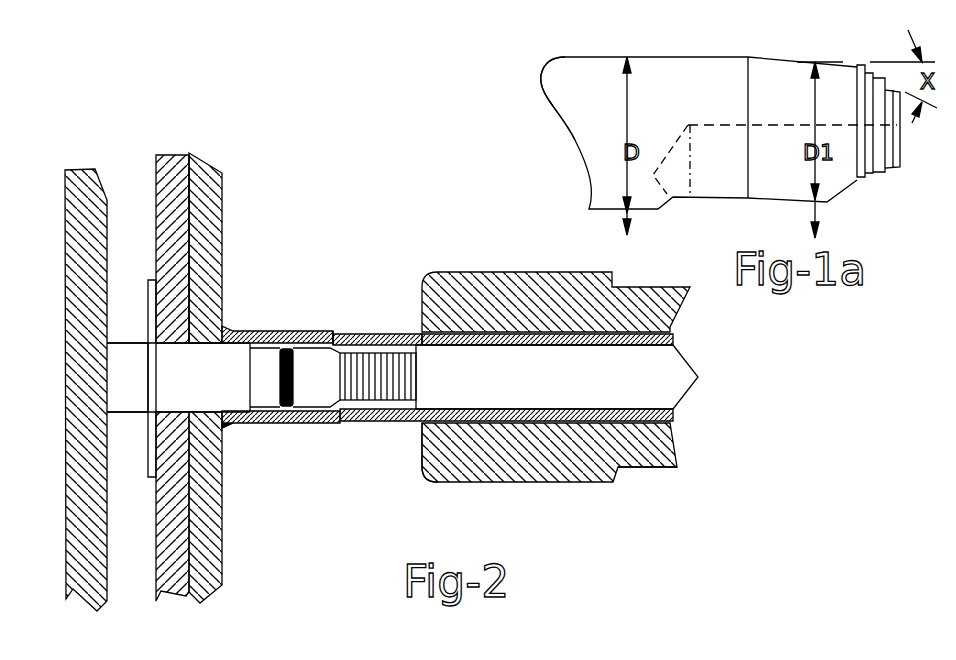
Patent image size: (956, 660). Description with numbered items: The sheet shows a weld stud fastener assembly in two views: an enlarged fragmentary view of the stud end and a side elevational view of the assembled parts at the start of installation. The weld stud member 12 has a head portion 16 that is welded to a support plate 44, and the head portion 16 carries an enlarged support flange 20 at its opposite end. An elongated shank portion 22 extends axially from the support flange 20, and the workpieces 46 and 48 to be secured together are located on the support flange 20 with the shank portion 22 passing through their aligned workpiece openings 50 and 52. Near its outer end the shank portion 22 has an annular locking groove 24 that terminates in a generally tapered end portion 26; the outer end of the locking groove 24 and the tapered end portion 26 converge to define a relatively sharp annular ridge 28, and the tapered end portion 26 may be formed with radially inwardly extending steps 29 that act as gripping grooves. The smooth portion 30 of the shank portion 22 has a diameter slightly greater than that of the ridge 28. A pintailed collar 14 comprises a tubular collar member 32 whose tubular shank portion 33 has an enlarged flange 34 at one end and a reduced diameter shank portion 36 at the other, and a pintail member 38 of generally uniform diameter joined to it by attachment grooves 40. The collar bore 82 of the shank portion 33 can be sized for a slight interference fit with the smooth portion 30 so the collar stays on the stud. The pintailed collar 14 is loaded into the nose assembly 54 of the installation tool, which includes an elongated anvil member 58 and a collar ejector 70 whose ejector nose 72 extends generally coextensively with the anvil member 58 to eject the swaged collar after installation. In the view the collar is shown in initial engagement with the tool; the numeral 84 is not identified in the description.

In FIG. 1A, the weld stud member 12 is at (578, 142).
In FIG. 2, the weld stud member 12 is at (120, 403).
In FIG. 2, the pintailed collar 14 is at (373, 432).
In FIG. 2, the head portion 16 is at (127, 353).
In FIG. 2, the support flange 20 is at (150, 280).
In FIG. 1A, the shank portion 22 is at (742, 57).
In FIG. 2, the shank portion 22 is at (200, 411).
In FIG. 1A, the annular locking groove 24 is at (867, 50).
In FIG. 2, the annular locking groove 24 is at (273, 411).
In FIG. 2, the tapered end portion 26 is at (350, 320).
In FIG. 1A, the annular ridge 28 is at (853, 64).
In FIG. 1A, the steps 29 is at (872, 133).
In FIG. 1A, the smooth portion 30 is at (563, 83).
In FIG. 2, the smooth portion 30 is at (228, 428).
In FIG. 2, the tubular collar member 32 is at (330, 333).
In FIG. 2, the tubular shank portion 33 is at (258, 350).
In FIG. 2, the enlarged flange 34 is at (227, 332).
In FIG. 2, the reduced diameter shank portion 36 is at (373, 335).
In FIG. 2, the pintail member 38 is at (640, 393).
In FIG. 2, the attachment grooves 40 is at (413, 340).
In FIG. 2, the support plate 44 is at (100, 200).
In FIG. 2, the workpiece 46 is at (175, 163).
In FIG. 2, the workpiece 48 is at (217, 177).
In FIG. 2, the workpiece opening 50 is at (202, 322).
In FIG. 2, the workpiece opening 52 is at (215, 310).
In FIG. 2, the nose assembly 54 is at (603, 490).
In FIG. 2, the elongated anvil member 58 is at (450, 460).
In FIG. 2, the collar ejector 70 is at (495, 335).
In FIG. 2, the ejector nose 72 is at (525, 420).
In FIG. 2, the collar bore 82 is at (336, 420).
In FIG. 2, the sleeve upper wall 84 is at (448, 340).